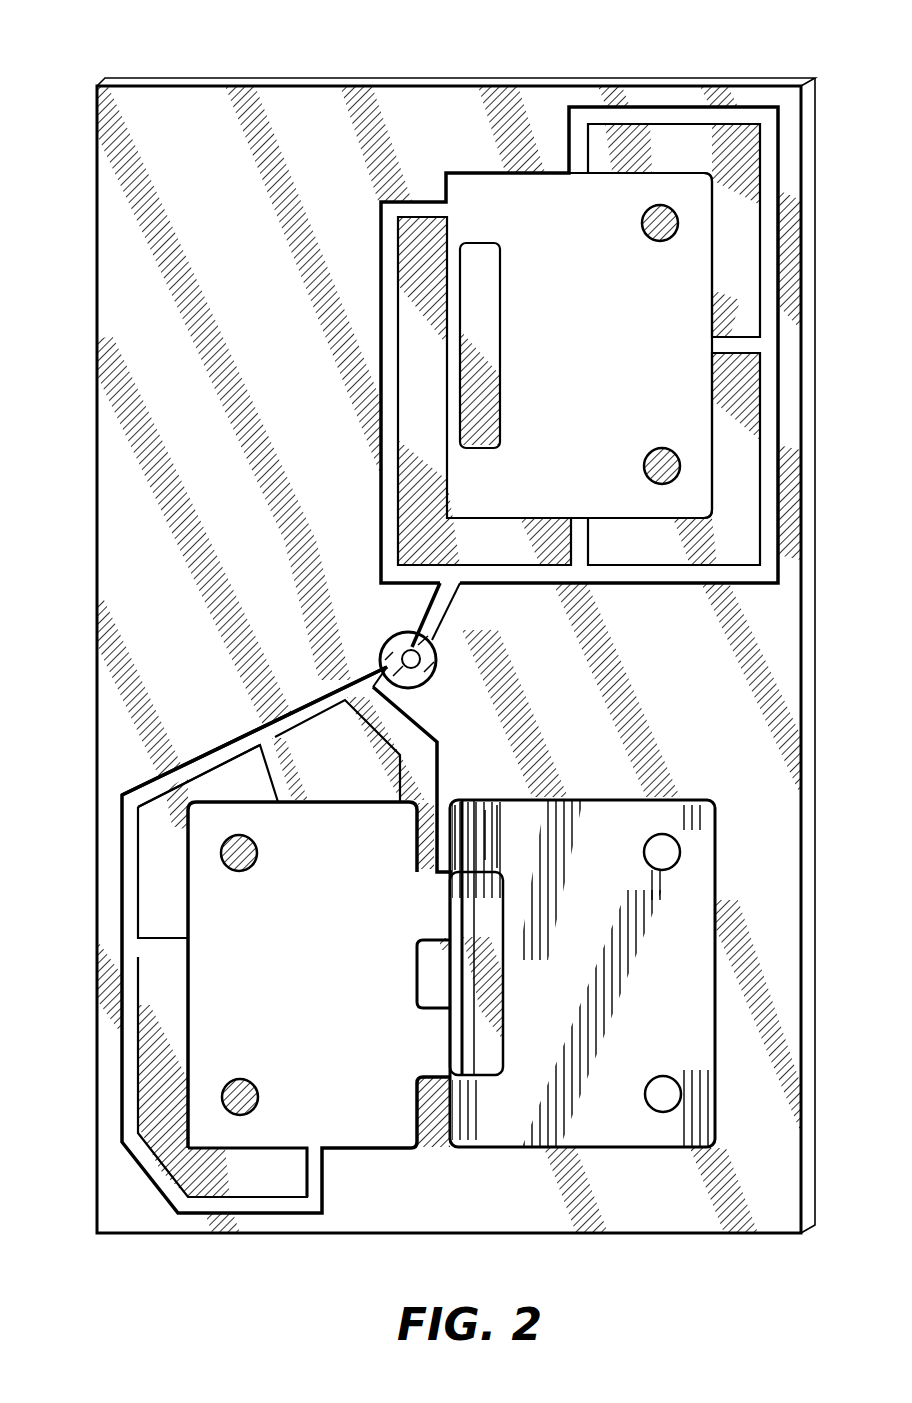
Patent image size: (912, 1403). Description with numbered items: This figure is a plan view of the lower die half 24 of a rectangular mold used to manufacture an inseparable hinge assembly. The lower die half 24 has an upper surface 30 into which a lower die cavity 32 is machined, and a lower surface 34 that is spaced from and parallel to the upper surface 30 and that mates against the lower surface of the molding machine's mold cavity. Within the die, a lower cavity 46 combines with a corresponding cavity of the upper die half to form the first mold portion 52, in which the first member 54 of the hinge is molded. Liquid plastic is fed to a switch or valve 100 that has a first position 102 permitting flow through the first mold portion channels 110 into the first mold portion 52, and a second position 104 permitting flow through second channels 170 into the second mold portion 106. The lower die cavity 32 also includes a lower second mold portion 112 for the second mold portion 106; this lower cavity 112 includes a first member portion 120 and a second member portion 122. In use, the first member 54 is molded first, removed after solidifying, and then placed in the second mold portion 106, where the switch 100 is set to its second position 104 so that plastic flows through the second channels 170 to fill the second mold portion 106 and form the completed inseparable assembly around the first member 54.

The lower die half 24 is at (106, 36).
The upper surface 30 is at (425, 100).
The lower surface 34 is at (538, 78).
The first mold portion 52 is at (356, 160).
The lower die cavity 32 is at (307, 543).
The second mold portion 106 is at (668, 740).
The first mold portion channels 110 is at (615, 585).
The lower cavity 46 is at (665, 172).
The first position 102 is at (428, 627).
The switch or valve 100 is at (437, 680).
The second position 104 is at (380, 676).
The lower second mold portion 112 is at (437, 1153).
The second channels 170 is at (240, 732).
The second member portion 122 is at (328, 802).
The first member portion 120 is at (578, 800).
The first member 54 is at (700, 1052).